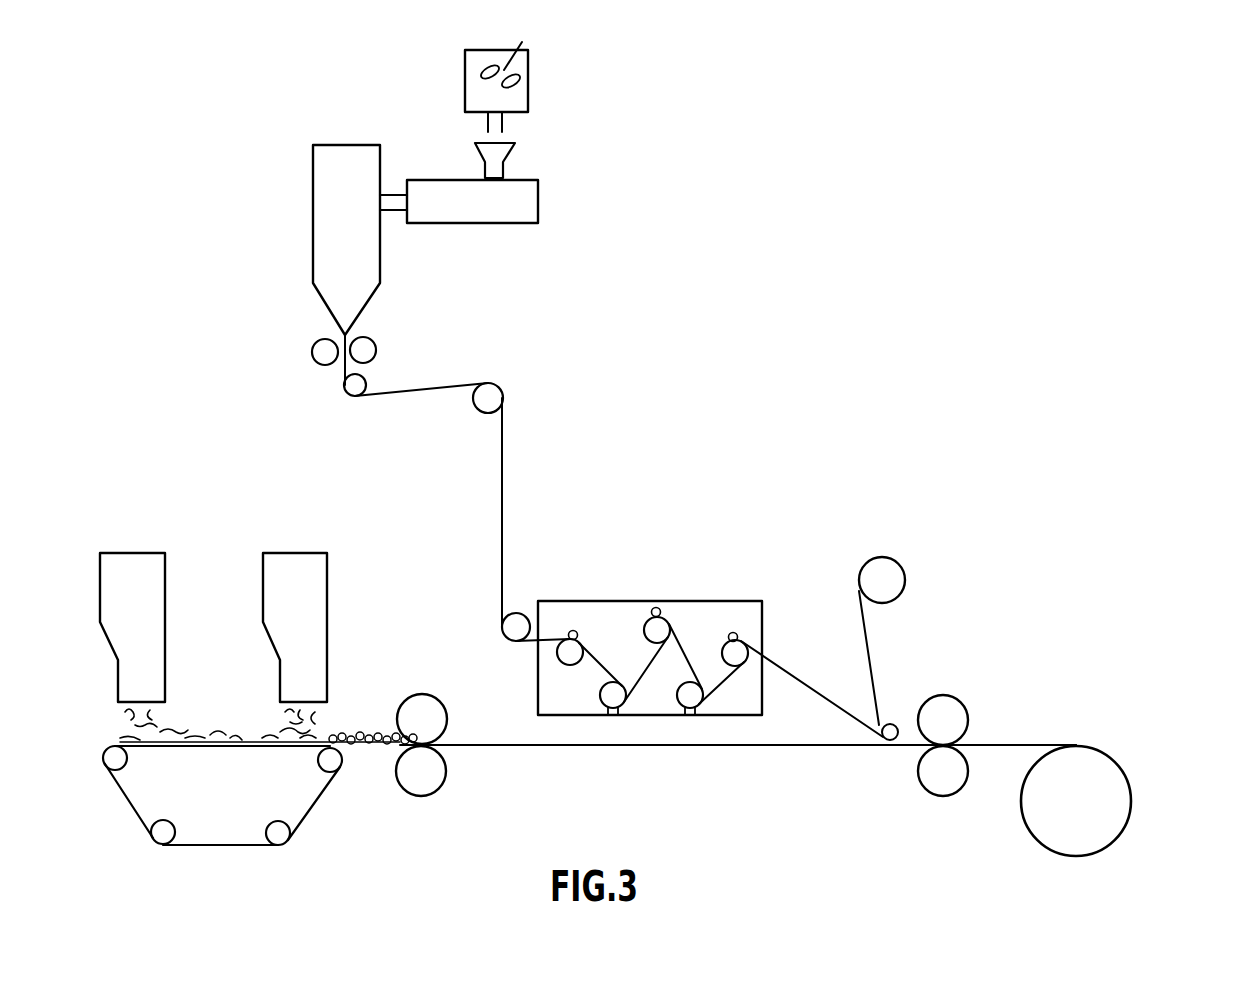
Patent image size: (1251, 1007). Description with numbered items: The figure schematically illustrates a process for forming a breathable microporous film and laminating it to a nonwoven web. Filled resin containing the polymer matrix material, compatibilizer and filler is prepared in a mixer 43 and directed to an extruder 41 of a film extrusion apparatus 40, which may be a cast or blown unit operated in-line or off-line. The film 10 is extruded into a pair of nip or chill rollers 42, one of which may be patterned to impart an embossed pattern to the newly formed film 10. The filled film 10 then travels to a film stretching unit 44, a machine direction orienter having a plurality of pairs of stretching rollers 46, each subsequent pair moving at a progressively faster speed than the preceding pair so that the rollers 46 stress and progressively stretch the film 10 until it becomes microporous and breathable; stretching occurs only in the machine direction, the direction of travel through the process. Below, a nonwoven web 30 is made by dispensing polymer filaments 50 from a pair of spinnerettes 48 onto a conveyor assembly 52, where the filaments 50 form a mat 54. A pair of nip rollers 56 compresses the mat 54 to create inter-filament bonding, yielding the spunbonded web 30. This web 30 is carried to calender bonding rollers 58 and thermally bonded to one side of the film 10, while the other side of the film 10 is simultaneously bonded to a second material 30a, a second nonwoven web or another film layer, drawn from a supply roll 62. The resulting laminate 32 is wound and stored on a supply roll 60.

The film 10 is at (418, 392).
The nonwoven web 30 is at (531, 745).
The second material 30a is at (868, 655).
The laminate 32 is at (1035, 745).
The film extrusion apparatus 40 is at (345, 168).
The extruder 41 is at (540, 205).
The nip or chill rollers 42 is at (313, 345).
The mixer 43 is at (525, 92).
The film stretching unit 44 is at (684, 601).
The stretching rollers 46 is at (573, 631).
The spinnerettes 48 is at (127, 552).
The polymer filaments 50 is at (290, 730).
The conveyor assembly 52 is at (255, 845).
The mat 54 is at (372, 740).
The nip rollers 56 is at (435, 695).
The calender bonding rollers 58 is at (962, 708).
The supply roll 60 is at (1132, 808).
The supply roll 62 is at (885, 558).